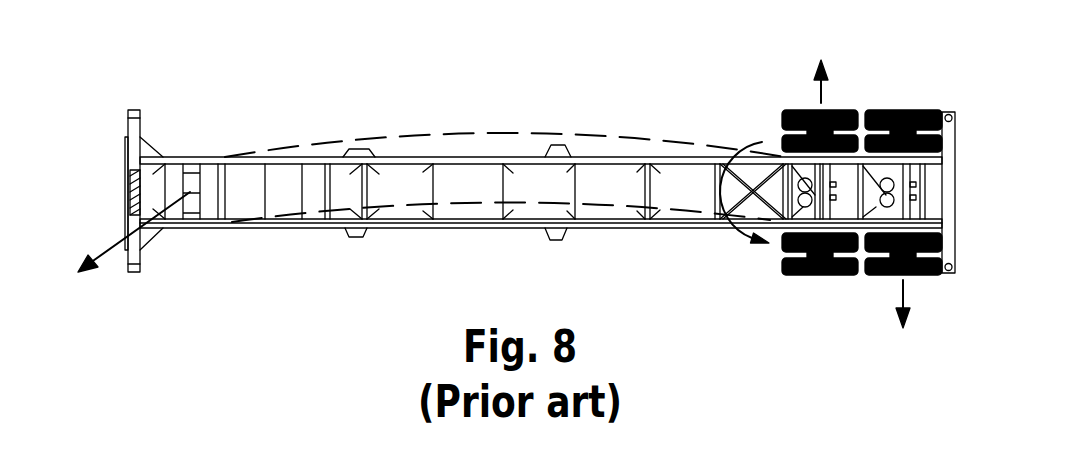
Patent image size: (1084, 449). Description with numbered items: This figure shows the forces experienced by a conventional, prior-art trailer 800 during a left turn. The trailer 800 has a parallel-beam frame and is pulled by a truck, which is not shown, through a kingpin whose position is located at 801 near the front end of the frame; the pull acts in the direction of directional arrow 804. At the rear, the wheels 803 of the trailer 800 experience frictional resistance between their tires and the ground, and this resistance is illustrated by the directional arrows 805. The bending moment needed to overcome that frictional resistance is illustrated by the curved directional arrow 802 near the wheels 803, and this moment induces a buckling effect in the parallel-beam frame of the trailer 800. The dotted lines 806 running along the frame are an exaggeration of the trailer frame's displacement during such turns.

The trailer 800 is at (501, 182).
The kingpin position 801 is at (192, 170).
The directional arrow 802 is at (762, 143).
The wheels 803 is at (917, 130).
The directional arrow 804 is at (108, 248).
The directional arrows 805 is at (818, 93).
The dotted lines 806 is at (307, 143).